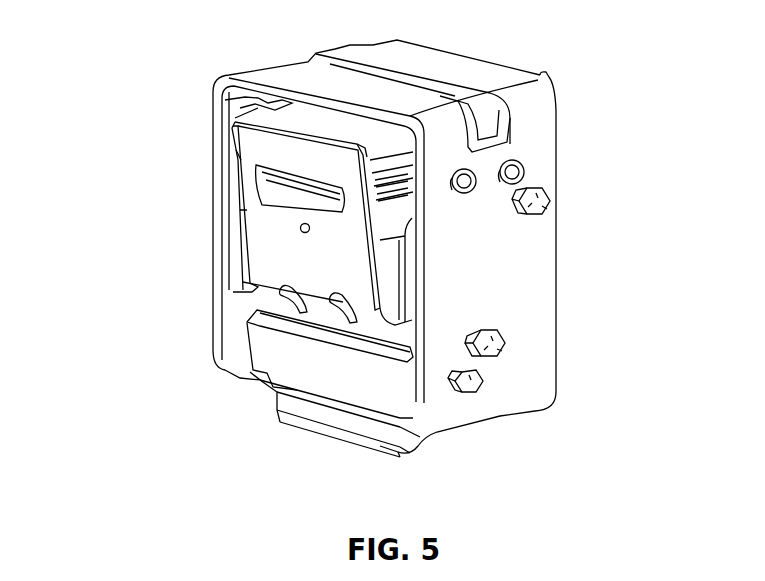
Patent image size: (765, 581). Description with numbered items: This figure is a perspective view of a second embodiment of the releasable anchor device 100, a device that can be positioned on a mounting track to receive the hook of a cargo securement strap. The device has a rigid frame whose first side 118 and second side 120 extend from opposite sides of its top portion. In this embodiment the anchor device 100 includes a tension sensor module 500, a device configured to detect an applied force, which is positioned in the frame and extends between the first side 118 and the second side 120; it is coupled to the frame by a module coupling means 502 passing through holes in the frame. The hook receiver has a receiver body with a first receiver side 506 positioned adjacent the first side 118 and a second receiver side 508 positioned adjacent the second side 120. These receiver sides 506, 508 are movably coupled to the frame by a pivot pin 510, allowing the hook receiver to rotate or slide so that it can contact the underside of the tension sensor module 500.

The releasable anchor device 100 is at (156, 40).
The first side 118 is at (218, 178).
The second side 120 is at (424, 315).
The tension sensor module 500 is at (293, 120).
The module coupling means 502 is at (470, 172).
The first receiver side 506 is at (237, 238).
The second receiver side 508 is at (408, 278).
The pivot pin 510 is at (548, 200).